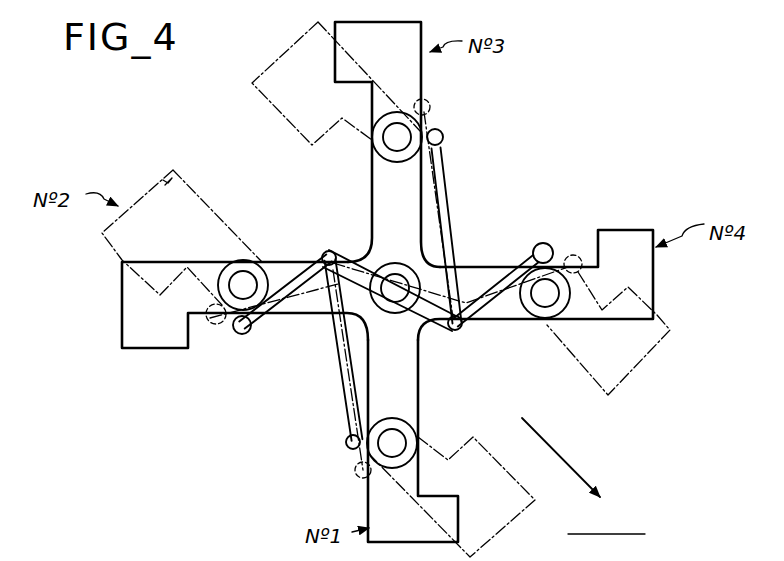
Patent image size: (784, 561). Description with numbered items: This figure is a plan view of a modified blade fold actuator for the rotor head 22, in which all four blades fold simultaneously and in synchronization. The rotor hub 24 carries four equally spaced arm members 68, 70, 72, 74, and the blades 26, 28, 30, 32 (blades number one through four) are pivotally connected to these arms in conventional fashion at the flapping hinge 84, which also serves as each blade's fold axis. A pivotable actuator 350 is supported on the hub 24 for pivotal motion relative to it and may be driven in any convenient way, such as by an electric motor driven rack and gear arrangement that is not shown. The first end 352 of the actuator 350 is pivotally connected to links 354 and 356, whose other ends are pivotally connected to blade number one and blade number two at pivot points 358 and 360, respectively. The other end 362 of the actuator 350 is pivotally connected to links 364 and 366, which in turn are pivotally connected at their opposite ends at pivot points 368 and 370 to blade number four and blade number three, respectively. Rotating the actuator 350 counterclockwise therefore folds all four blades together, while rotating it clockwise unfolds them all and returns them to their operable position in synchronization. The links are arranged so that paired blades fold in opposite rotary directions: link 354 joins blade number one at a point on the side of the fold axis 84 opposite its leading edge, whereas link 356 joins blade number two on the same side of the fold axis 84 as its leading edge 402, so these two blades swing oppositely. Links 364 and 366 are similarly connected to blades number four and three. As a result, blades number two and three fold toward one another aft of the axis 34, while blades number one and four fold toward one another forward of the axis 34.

The carriage 22 is at (558, 153).
The rotor hub 24 is at (408, 392).
The blade 26 is at (370, 497).
The blade 28 is at (178, 197).
The blade 30 is at (413, 77).
The blade 32 is at (670, 330).
The axis 34 is at (397, 288).
The arm member 68 is at (407, 412).
The arm member 70 is at (266, 261).
The arm member 72 is at (372, 213).
The arm member 74 is at (508, 319).
The flapping hinge 84 is at (395, 139).
The pivotable actuator 350 is at (352, 255).
The first end of actuator 352 is at (326, 251).
The link 354 is at (341, 390).
The link 356 is at (271, 316).
The pivot point 358 is at (346, 442).
The pivot point 360 is at (212, 326).
The other end of actuator 362 is at (451, 330).
The link 364 is at (534, 256).
The link 366 is at (440, 166).
The pivot point 368 is at (580, 255).
The pivot point 370 is at (430, 107).
The leading edge 402 is at (192, 130).